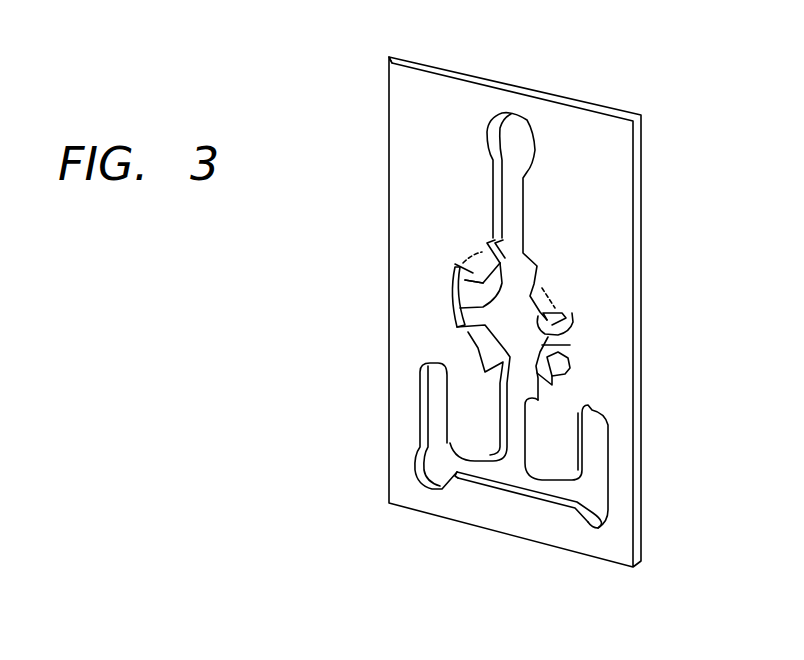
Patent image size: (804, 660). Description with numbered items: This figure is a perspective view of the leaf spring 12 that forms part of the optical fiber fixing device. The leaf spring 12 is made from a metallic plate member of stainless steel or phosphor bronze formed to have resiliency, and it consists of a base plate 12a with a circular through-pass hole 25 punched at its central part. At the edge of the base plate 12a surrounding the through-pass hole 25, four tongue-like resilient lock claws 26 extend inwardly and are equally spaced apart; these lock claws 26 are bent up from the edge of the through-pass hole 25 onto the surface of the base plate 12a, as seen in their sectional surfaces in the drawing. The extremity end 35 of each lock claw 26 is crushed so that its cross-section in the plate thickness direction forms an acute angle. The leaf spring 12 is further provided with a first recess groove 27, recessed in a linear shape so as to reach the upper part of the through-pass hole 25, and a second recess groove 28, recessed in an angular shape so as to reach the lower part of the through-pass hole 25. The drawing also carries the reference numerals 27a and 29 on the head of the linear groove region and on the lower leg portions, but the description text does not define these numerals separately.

The leaf spring 12 is at (593, 102).
The base plate 12a is at (405, 186).
The through-pass hole 25 is at (542, 347).
The resilient lock claw 26 is at (450, 280).
The first recess groove 27 is at (520, 220).
The tongue head 27a is at (513, 140).
The second recess groove 28 is at (516, 450).
The leg 29 is at (472, 443).
The extremity end of the lock claw 35 is at (470, 306).